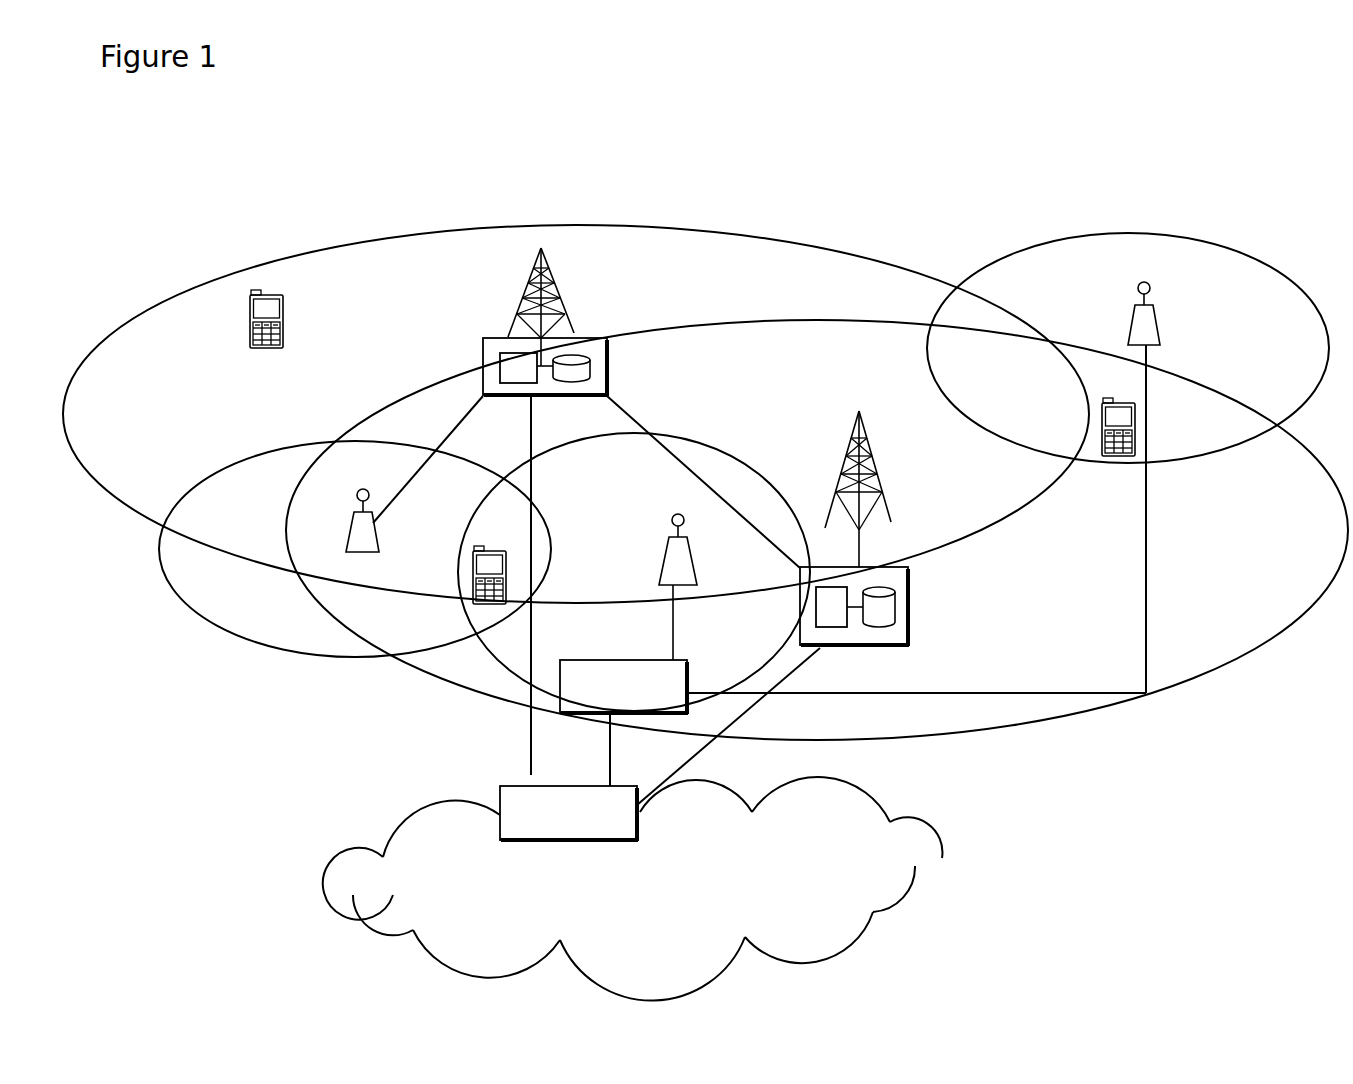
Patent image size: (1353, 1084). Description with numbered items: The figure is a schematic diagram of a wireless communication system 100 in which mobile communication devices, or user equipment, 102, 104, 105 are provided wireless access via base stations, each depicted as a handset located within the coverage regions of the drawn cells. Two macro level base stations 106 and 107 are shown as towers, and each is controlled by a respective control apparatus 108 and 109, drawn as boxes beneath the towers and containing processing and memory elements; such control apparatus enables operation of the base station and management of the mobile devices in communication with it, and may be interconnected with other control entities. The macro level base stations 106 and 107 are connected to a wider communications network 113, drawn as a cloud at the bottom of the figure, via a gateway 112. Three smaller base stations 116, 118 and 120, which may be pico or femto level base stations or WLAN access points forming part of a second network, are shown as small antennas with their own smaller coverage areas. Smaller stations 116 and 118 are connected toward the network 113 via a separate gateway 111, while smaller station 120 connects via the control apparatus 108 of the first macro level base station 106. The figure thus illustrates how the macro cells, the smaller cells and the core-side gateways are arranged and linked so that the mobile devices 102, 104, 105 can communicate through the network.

The wireless communication system 100 is at (163, 281).
The mobile communication device 102 is at (247, 340).
The mobile communication device 104 is at (474, 581).
The mobile communication device 105 is at (1118, 460).
The macro level base station 106 is at (524, 301).
The macro level base station 107 is at (885, 489).
The control apparatus 108 is at (483, 352).
The control apparatus 109 is at (898, 630).
The gateway 111 is at (568, 693).
The gateway 112 is at (500, 786).
The wider communications network 113 is at (417, 850).
The smaller base station 116 is at (1127, 318).
The smaller base station 118 is at (681, 565).
The smaller base station 120 is at (350, 528).